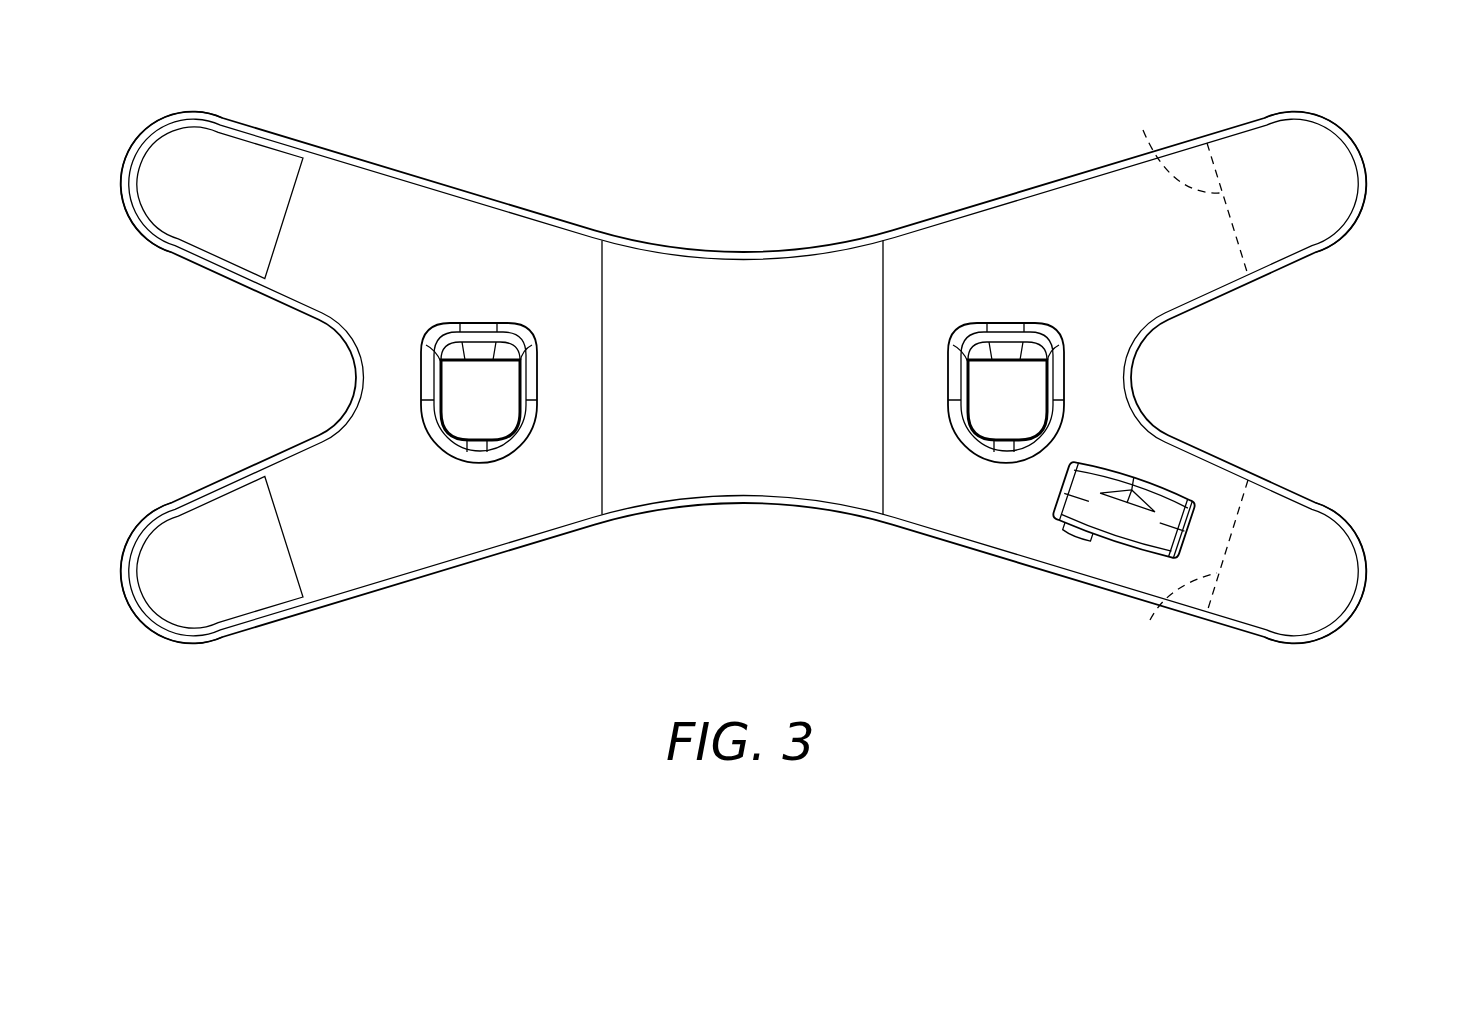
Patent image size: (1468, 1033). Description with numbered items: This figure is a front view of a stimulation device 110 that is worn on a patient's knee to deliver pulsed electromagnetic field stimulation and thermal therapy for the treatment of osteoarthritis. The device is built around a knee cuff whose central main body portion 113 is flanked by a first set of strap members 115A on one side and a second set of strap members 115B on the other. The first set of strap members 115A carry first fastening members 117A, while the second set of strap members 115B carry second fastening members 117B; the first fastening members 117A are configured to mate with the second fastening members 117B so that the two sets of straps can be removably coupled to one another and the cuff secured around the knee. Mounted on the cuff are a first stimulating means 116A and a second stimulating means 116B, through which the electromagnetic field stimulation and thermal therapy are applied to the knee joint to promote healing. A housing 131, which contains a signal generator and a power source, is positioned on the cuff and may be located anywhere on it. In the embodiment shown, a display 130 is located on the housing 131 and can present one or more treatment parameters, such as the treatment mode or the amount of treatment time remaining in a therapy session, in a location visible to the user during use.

The stimulation device 110 is at (1340, 74).
The main body portion 113 is at (750, 389).
The first set of strap members 115A is at (1350, 156).
The second set of strap members 115B is at (131, 171).
The first stimulating means 116A is at (1007, 322).
The second stimulating means 116B is at (480, 322).
The first fastening members 117A is at (1147, 138).
The second fastening members 117B is at (290, 216).
The display 130 is at (1063, 510).
The housing 131 is at (1097, 467).